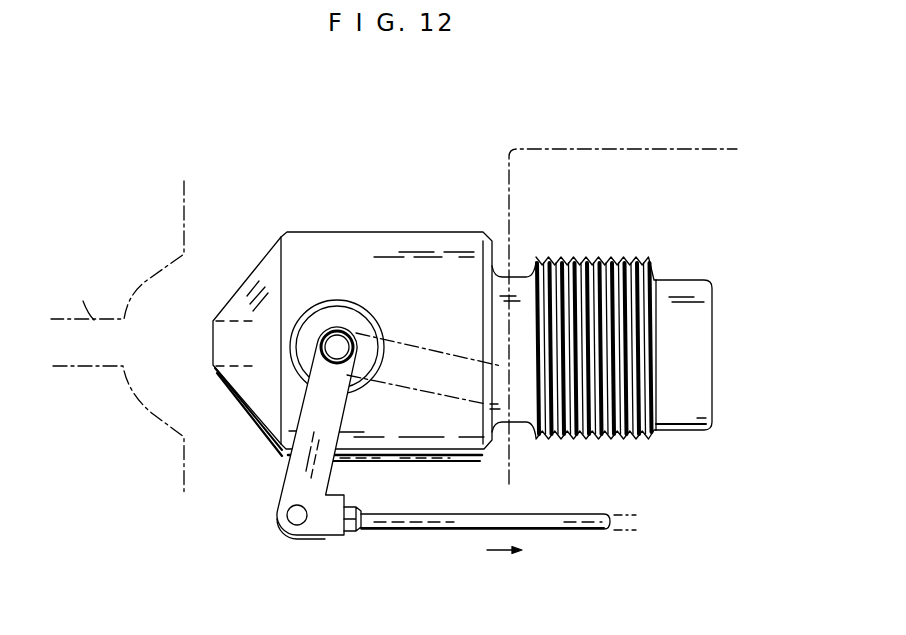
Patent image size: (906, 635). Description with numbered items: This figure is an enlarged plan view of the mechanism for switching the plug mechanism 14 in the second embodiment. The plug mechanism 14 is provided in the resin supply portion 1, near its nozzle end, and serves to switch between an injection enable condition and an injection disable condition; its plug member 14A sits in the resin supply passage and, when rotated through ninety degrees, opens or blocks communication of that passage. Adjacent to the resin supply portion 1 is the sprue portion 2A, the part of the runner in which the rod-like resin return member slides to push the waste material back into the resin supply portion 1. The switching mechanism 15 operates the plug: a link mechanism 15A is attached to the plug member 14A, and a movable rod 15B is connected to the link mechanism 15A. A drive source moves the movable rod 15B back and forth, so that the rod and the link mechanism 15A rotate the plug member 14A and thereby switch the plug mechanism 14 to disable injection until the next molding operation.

The resin supply portion 1 is at (253, 412).
The sprue portion 2A is at (114, 337).
The plug mechanism 14 is at (331, 272).
The plug member 14A is at (351, 314).
The switching mechanism 15 is at (412, 321).
The link mechanism 15A is at (272, 490).
The movable rod 15B is at (447, 531).